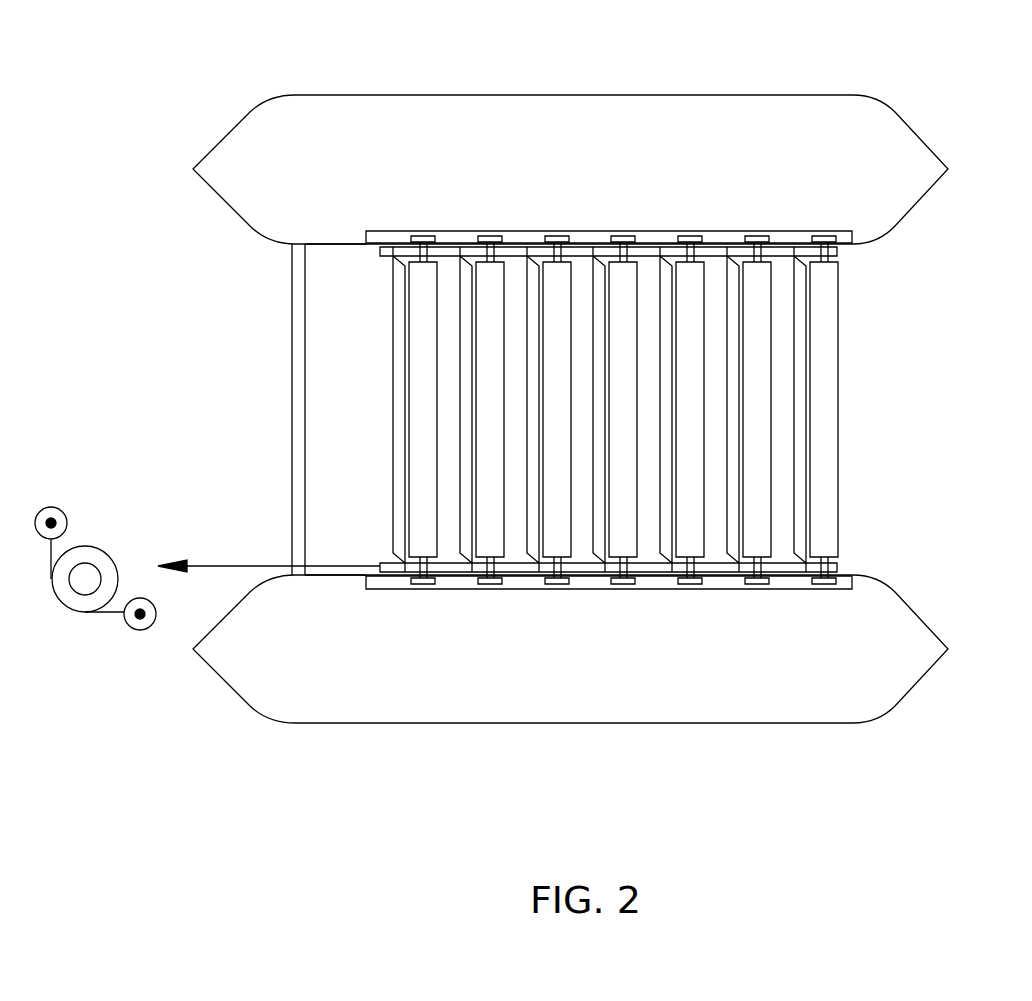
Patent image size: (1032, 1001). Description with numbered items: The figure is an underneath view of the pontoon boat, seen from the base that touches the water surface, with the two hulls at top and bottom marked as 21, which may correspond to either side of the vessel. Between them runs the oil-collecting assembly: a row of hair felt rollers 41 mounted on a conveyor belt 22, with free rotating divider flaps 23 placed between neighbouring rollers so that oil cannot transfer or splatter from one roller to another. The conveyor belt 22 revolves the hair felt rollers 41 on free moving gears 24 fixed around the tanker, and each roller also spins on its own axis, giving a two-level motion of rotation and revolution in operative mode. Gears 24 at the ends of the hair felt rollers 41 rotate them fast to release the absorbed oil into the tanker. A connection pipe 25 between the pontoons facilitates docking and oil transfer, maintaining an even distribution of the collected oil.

The side of the vessel 21 is at (803, 123).
The conveyor belt 22 is at (393, 252).
The divider flaps 23 is at (460, 474).
The free moving gears 24 is at (412, 237).
The connection pipe 25 is at (290, 456).
The hair felt rollers 41 is at (838, 524).